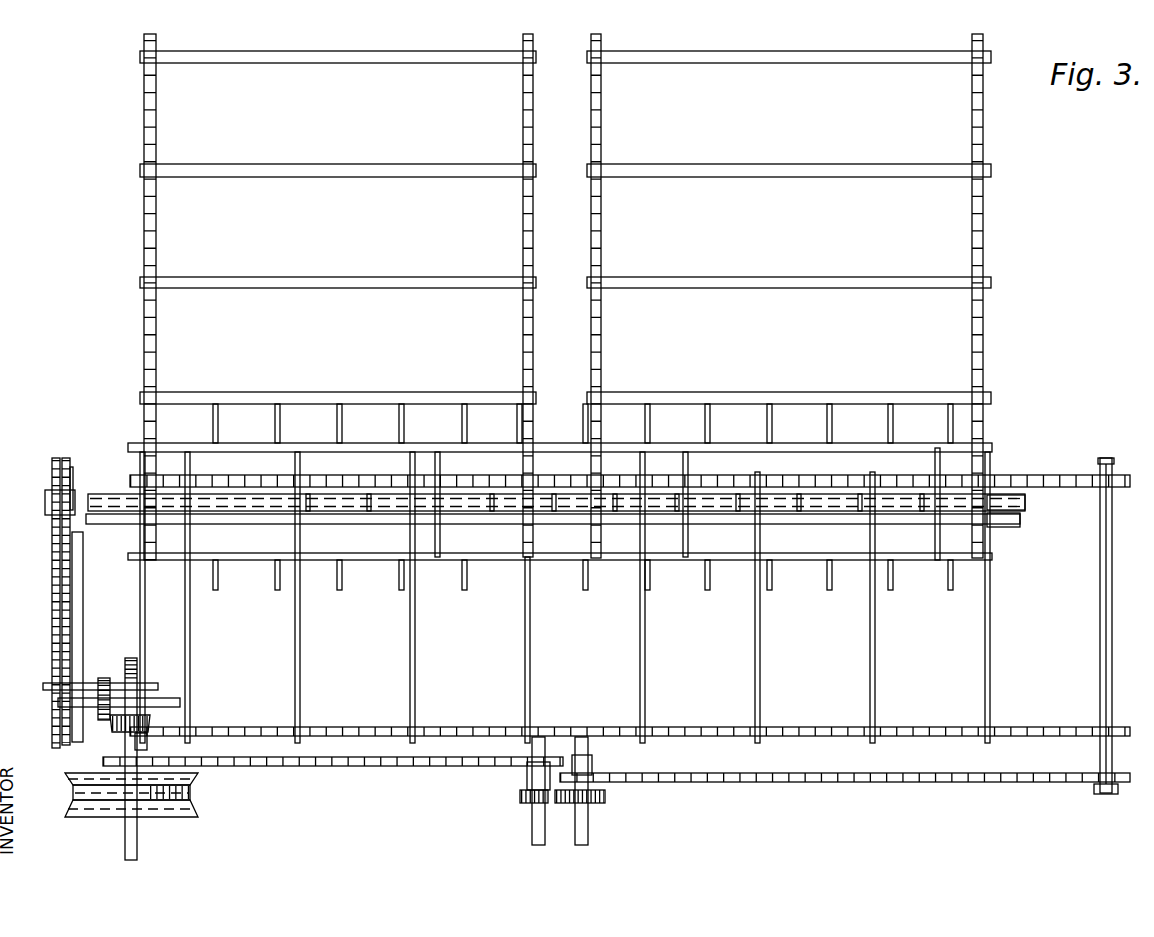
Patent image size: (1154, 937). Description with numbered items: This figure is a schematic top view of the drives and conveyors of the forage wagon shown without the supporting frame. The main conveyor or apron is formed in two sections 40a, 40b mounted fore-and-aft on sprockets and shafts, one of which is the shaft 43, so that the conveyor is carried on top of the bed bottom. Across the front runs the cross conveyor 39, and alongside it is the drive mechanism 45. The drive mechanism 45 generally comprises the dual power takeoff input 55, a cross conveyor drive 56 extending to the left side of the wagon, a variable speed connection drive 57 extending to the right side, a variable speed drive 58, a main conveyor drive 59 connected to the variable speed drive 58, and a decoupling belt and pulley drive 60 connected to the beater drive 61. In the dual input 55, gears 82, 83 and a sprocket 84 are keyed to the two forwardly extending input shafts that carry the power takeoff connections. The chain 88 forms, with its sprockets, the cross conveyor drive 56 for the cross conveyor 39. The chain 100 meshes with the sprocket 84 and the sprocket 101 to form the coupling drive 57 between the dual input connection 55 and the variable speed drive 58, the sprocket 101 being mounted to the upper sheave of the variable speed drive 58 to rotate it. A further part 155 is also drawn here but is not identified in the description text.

The main conveyor section 40a is at (143, 334).
The main conveyor section 40b is at (987, 336).
The drive shaft and chain 155 is at (88, 492).
The shaft 43 is at (1008, 528).
The main conveyor drive 59 is at (56, 555).
The beater drive 61 is at (62, 588).
The drive mechanism 45 is at (80, 753).
The decoupling belt and pulley drive 60 is at (104, 656).
The sprocket 101 is at (118, 768).
The variable speed drive 58 is at (190, 828).
The cross conveyor 39 is at (987, 712).
The chain 100 is at (330, 778).
The variable speed connection drive 57 is at (333, 790).
The chain 88 is at (760, 790).
The cross conveyor drive 56 is at (845, 802).
The dual power takeoff input 55 is at (553, 801).
The sprocket 84 is at (532, 776).
The gear 82 is at (520, 797).
The gear 83 is at (605, 795).